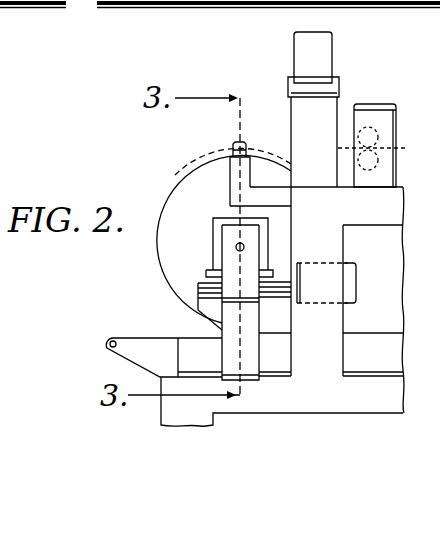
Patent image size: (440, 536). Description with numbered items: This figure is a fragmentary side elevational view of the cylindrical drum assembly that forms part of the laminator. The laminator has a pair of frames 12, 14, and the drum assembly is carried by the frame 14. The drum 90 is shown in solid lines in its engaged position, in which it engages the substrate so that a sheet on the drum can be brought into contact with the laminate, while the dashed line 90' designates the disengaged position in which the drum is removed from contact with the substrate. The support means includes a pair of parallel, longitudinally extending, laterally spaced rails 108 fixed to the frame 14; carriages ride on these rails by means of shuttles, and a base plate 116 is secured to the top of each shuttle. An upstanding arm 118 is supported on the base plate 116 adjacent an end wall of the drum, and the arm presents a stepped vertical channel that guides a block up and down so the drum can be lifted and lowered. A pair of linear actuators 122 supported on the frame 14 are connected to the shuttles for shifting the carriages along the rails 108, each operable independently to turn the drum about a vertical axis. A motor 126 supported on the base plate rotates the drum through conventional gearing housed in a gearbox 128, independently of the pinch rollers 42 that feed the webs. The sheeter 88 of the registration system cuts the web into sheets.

The frame 12 is at (33, 26).
The frame 14 is at (189, 11).
The sheeter 88 is at (286, 48).
The pinch rollers 42 is at (370, 110).
The drum 90 is at (186, 236).
The disengaged position of the drum 90' is at (224, 154).
The upstanding arm 118 is at (213, 220).
The base plate 116 is at (213, 273).
The rails 108 is at (198, 296).
The gearbox 128 is at (250, 263).
The linear actuators 122 is at (352, 282).
The motor 126 is at (253, 353).